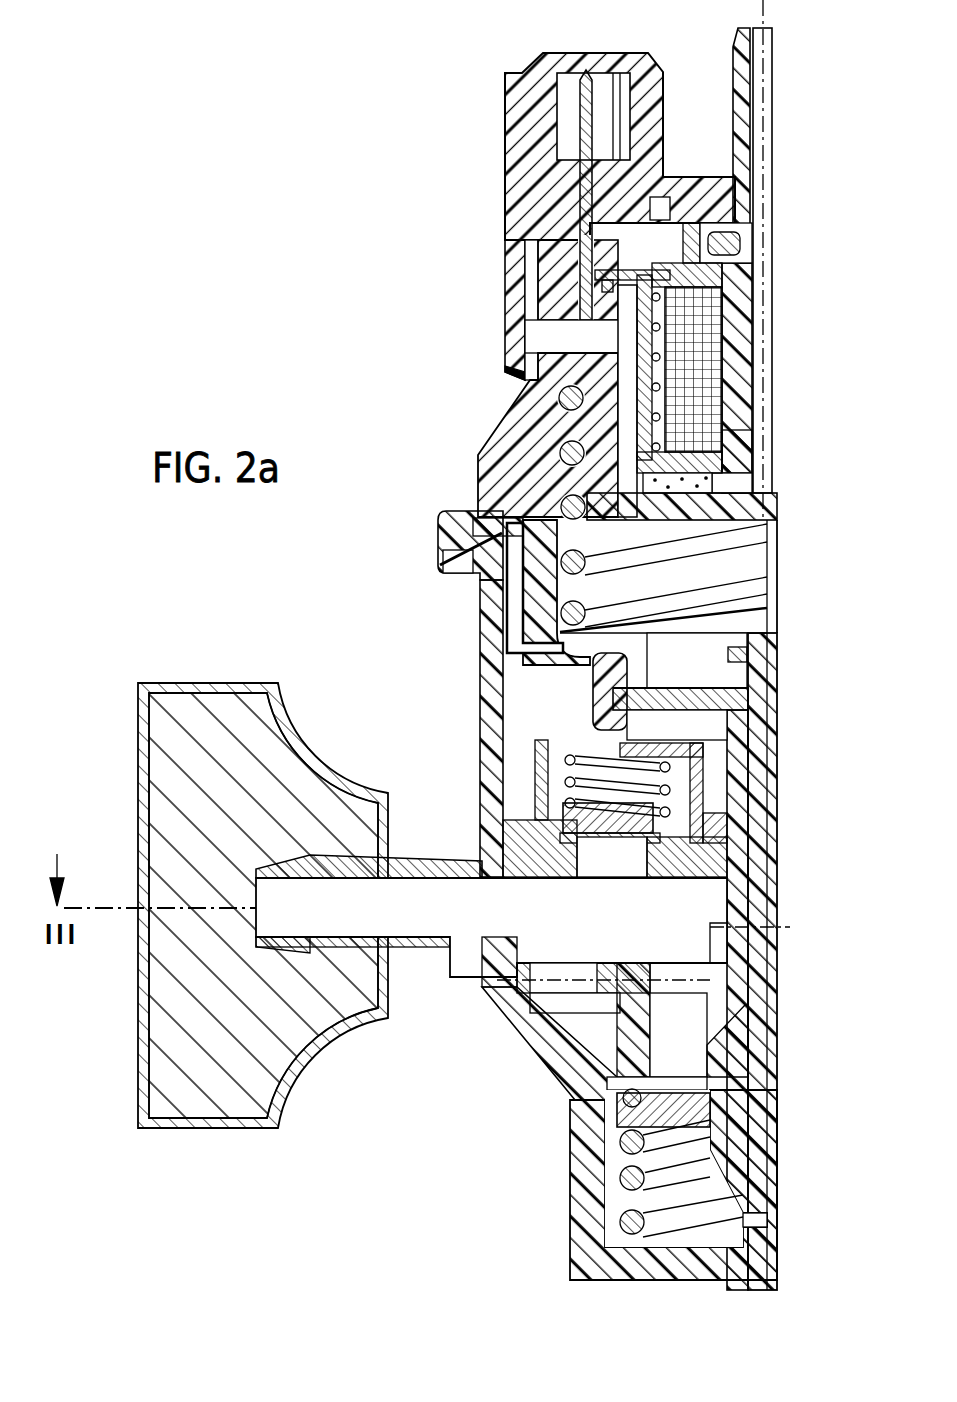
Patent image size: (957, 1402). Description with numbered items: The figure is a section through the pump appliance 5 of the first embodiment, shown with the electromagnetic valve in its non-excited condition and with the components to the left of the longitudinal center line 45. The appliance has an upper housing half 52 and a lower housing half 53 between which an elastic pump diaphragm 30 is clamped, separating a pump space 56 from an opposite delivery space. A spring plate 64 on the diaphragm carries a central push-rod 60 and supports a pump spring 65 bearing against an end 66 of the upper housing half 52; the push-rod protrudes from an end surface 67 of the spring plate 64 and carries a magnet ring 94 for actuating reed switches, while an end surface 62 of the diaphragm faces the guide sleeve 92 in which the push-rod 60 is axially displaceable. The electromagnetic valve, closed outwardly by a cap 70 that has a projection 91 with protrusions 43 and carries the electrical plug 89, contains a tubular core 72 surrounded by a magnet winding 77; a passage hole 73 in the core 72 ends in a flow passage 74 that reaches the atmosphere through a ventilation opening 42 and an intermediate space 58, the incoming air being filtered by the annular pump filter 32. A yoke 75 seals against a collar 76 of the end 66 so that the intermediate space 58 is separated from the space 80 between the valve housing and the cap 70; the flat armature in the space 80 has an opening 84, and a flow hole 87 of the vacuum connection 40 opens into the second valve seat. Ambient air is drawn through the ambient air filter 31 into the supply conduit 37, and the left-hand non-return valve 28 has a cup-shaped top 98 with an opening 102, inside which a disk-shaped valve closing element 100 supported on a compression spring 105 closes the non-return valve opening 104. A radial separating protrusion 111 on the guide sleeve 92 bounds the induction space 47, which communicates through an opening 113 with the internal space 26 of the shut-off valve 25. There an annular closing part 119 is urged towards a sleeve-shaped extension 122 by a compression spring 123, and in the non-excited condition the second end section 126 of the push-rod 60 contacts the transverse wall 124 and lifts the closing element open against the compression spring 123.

The pump appliance 5 is at (300, 46).
The shut-off valve 25 is at (681, 1210).
The internal space 26 is at (699, 1041).
The non-return valve 28 is at (583, 771).
The pump diaphragm 30 is at (522, 602).
The ambient air filter 31 is at (161, 1080).
The pump filter 32 is at (673, 520).
The supply conduit 37 is at (407, 921).
The vacuum connection 40 is at (742, 37).
The ventilation opening 42 is at (563, 332).
The protrusions 43 is at (523, 360).
The longitudinal center line 45 is at (766, 3).
The induction space 47 is at (634, 947).
The upper housing half 52 is at (490, 465).
The lower housing half 53 is at (488, 672).
The pump space 56 is at (717, 603).
The intermediate space 58 is at (627, 425).
The push-rod 60 is at (757, 722).
The end surface 62 is at (647, 735).
The spring plate 64 is at (575, 645).
The pump spring 65 is at (563, 503).
The end 66 is at (523, 403).
The end surface 67 is at (700, 683).
The cap 70 is at (513, 220).
The core 72 is at (742, 442).
The passage hole 73 is at (760, 332).
The flow passage 74 is at (750, 485).
The yoke 75 is at (600, 282).
The collar 76 is at (603, 295).
The magnet winding 77 is at (700, 378).
The space 80 is at (703, 230).
The opening 84 is at (750, 233).
The flow hole 87 is at (758, 120).
The electrical plug 89 is at (537, 90).
The projection 91 is at (517, 263).
The guide sleeve 92 is at (737, 835).
The magnet ring 94 is at (728, 655).
The top 98 is at (537, 792).
The valve closing element 100 is at (647, 873).
The opening 102 is at (693, 765).
The non-return valve opening 104 is at (603, 867).
The compression spring 105 is at (557, 830).
The separating protrusion 111 is at (740, 805).
The opening 113 is at (563, 983).
The closing part 119 is at (617, 1123).
The extension 122 is at (590, 1082).
The compression spring 123 is at (617, 1178).
The transverse wall 124 is at (770, 1220).
The end section 126 is at (757, 1217).